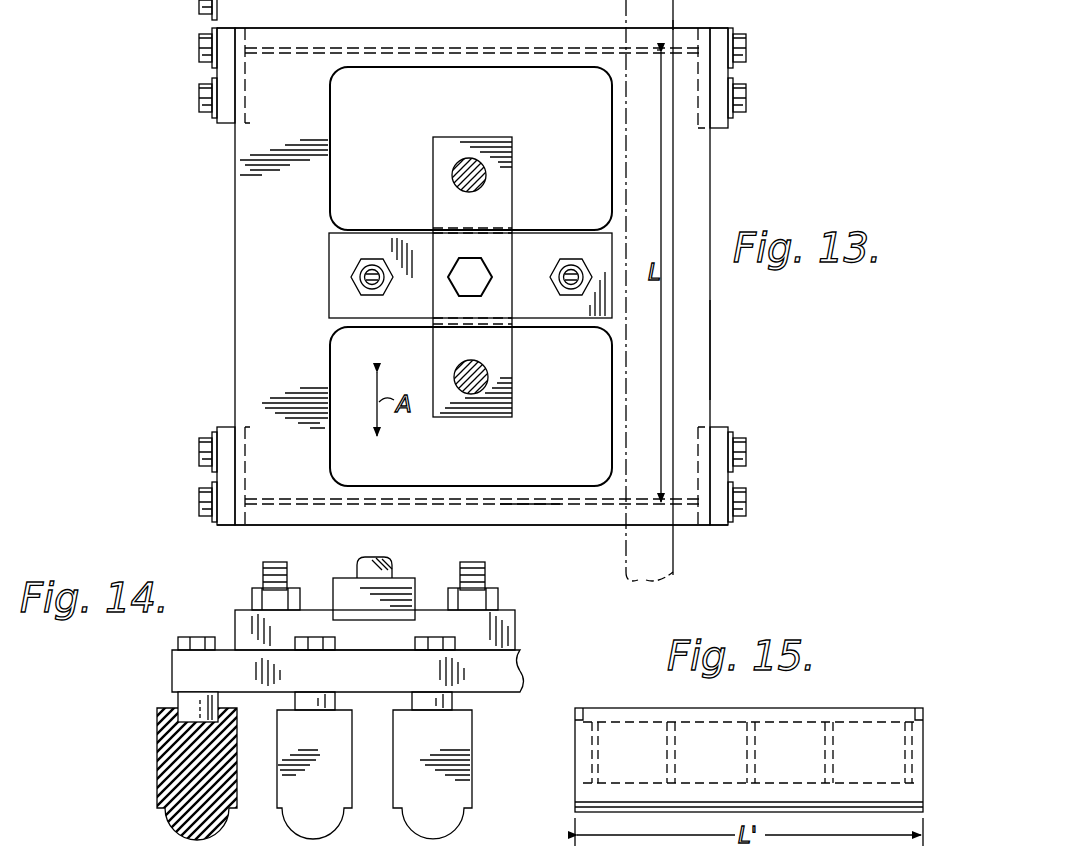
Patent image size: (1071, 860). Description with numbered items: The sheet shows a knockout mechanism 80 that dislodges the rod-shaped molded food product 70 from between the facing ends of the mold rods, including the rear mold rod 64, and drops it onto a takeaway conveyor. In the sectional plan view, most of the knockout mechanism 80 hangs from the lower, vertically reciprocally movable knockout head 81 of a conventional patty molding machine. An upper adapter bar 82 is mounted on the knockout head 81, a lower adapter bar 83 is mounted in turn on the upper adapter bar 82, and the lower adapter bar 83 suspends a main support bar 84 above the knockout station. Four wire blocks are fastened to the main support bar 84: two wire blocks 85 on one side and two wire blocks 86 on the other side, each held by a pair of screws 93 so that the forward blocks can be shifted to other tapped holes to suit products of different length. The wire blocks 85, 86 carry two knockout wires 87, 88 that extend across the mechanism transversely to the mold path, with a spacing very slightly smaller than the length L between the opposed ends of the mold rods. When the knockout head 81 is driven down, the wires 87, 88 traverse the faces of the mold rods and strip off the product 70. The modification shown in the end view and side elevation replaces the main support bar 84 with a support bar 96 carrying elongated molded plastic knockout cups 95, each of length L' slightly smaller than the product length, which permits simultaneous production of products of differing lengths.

In FIG. 13, the rear mold rod 64 is at (675, 567).
In FIG. 13, the molded food product 70 is at (676, 316).
In FIG. 13, the knockout mechanism 80 is at (720, 382).
In FIG. 13, the knockout head 81 is at (674, 12).
In FIG. 13, the upper adapter bar 82 is at (508, 210).
In FIG. 14, the upper adapter bar 82 is at (412, 580).
In FIG. 13, the lower adapter bar 83 is at (540, 322).
In FIG. 14, the lower adapter bar 83 is at (512, 634).
In FIG. 13, the main support bar 84 is at (245, 308).
In FIG. 13, the wire block 85 is at (716, 130).
In FIG. 13, the wire block 86 is at (224, 125).
In FIG. 13, the knockout wire 87 is at (512, 55).
In FIG. 13, the knockout wire 88 is at (546, 506).
In FIG. 13, the screw 93 is at (198, 100).
In FIG. 14, the knockout cup 95 is at (157, 768).
In FIG. 15, the knockout cup 95 is at (838, 708).
In FIG. 14, the support bar 96 is at (172, 672).